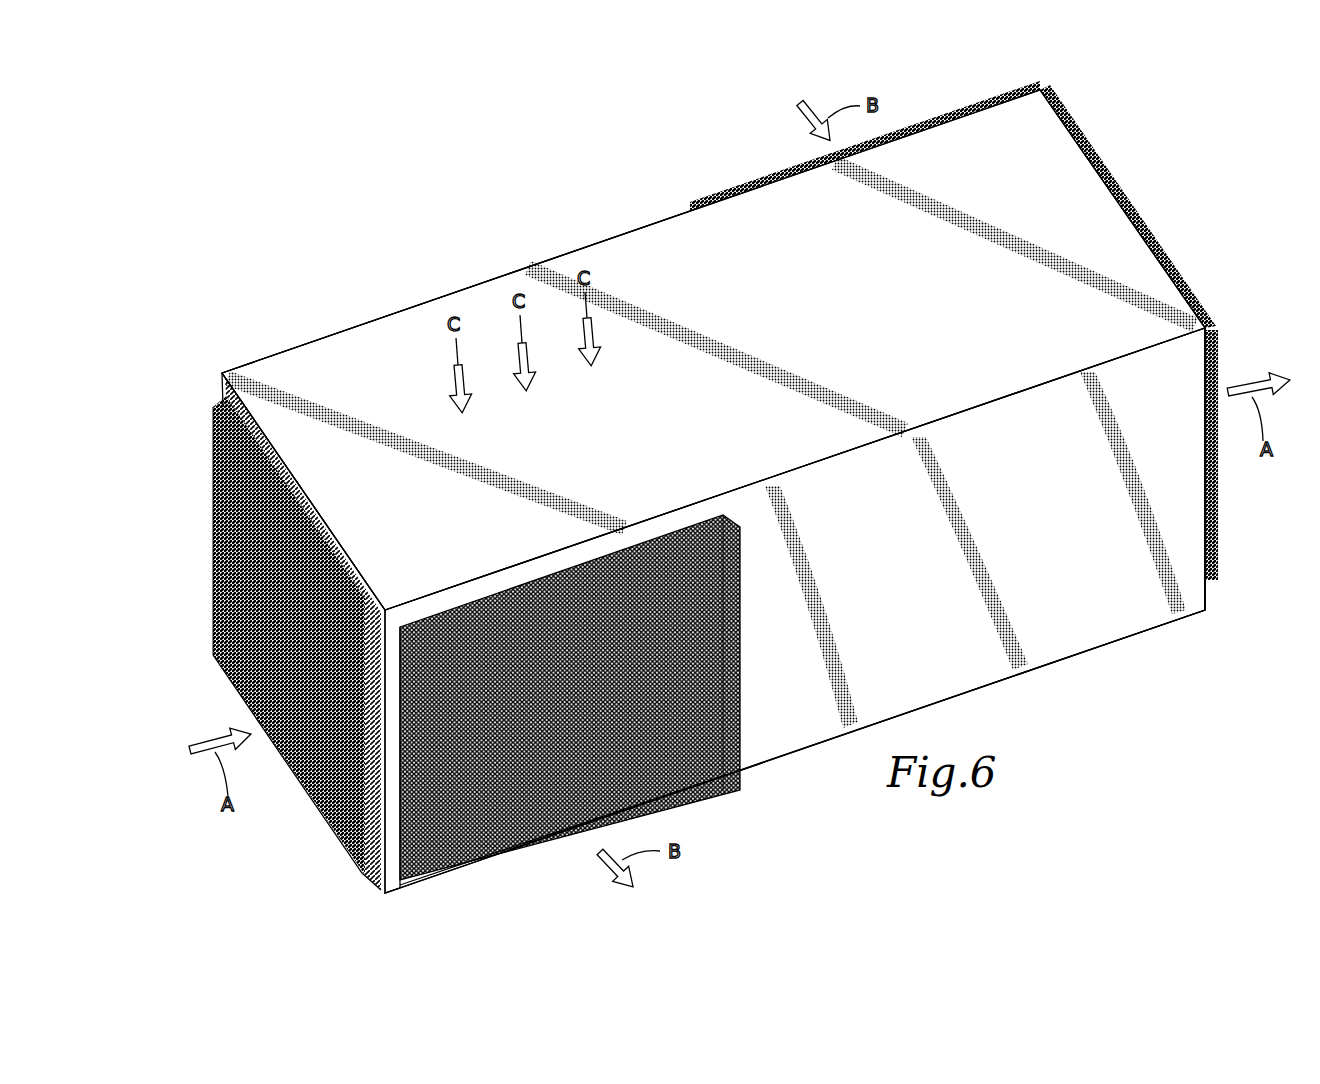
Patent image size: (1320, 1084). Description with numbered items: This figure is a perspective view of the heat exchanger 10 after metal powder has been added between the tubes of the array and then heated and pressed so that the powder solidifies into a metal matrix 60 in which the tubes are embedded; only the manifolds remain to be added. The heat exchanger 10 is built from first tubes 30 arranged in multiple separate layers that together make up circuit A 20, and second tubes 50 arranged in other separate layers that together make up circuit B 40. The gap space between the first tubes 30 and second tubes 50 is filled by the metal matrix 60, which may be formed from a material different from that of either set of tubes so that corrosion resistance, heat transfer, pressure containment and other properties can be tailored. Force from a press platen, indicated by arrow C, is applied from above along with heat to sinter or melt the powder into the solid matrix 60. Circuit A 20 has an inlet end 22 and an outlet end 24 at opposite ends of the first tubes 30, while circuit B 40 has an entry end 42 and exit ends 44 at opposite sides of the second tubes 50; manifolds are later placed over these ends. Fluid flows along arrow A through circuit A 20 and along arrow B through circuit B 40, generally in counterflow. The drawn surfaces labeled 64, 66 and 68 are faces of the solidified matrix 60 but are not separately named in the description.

The heat exchanger 10 is at (398, 257).
The circuit A 20 is at (690, 184).
The inlet end 22 is at (690, 205).
The outlet end 24 is at (556, 856).
The first tubes 30 is at (756, 183).
The circuit B 40 is at (190, 537).
The entry end 42 is at (362, 878).
The exit ends 44 is at (1213, 578).
The second tubes 50 is at (218, 401).
The metal matrix 60 is at (1122, 600).
The top wall 64 is at (786, 324).
The front wall 66 is at (949, 562).
The side edge 68 is at (330, 540).